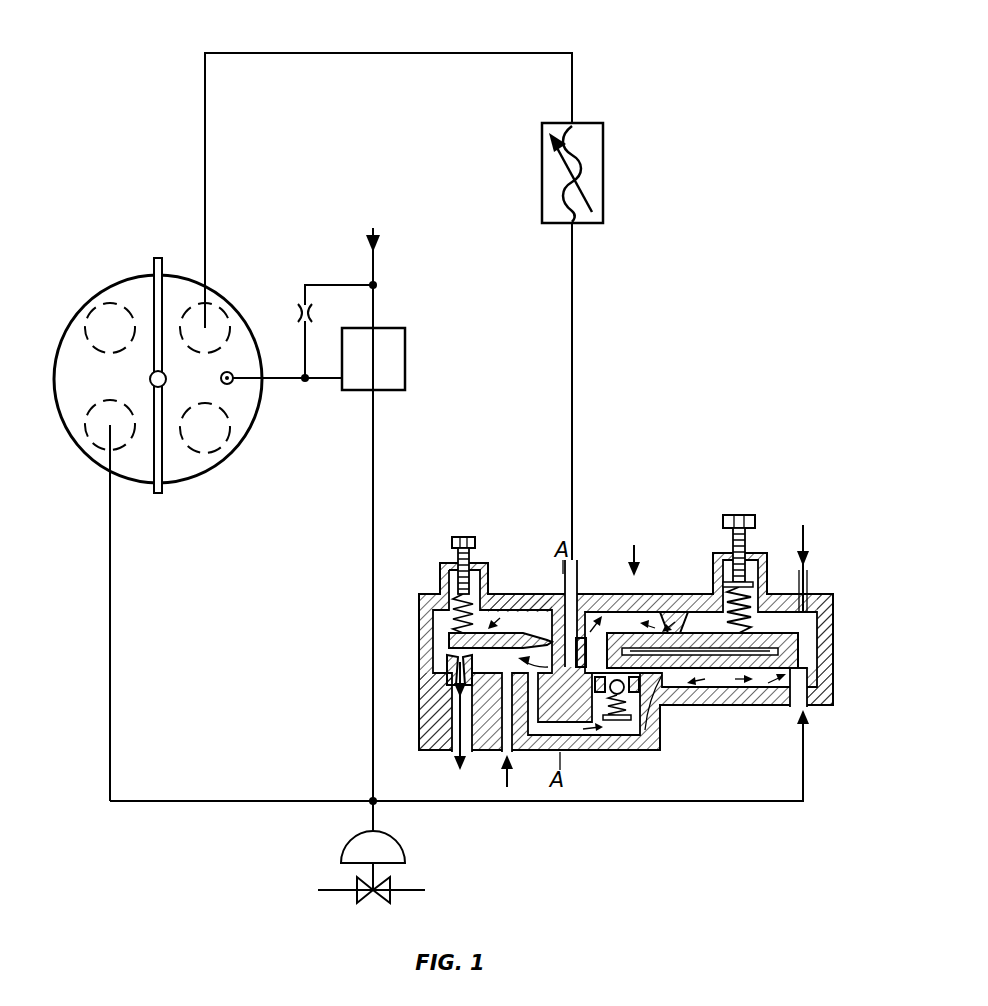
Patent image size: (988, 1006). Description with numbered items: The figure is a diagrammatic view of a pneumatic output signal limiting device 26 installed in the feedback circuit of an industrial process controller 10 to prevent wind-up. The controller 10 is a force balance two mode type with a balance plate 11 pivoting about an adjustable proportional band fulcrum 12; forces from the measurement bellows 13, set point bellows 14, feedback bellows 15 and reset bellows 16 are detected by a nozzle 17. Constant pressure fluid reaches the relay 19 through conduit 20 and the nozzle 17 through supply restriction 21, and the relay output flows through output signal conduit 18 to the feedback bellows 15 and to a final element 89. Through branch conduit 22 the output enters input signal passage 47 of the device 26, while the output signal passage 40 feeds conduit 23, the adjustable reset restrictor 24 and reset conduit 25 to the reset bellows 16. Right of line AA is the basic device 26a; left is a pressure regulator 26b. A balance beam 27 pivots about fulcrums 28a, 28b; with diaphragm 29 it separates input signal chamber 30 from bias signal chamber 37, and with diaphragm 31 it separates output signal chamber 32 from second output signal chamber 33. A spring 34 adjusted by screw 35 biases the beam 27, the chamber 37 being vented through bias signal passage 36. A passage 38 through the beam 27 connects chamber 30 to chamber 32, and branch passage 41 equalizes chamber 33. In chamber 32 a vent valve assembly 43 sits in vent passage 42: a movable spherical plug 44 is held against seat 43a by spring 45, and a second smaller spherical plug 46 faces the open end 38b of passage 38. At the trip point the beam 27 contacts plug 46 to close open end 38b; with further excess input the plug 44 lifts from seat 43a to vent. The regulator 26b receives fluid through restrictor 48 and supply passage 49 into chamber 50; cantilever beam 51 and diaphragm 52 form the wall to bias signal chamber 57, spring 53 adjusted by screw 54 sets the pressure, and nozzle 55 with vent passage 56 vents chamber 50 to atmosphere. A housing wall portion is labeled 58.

The industrial process controller 10 is at (94, 265).
The balance plate 11 is at (67, 426).
The adjustable proportional band fulcrum 12 is at (158, 258).
The measurement bellows 13 is at (100, 325).
The set point bellows 14 is at (213, 436).
The feedback bellows 15 is at (105, 434).
The reset bellows 16 is at (212, 322).
The nozzle 17 is at (232, 384).
The output signal conduit 18 is at (372, 551).
The relay 19 is at (406, 348).
The conduit 20 is at (376, 266).
The supply restriction 21 is at (314, 313).
The branch conduit 22 is at (440, 803).
The conduit 23 is at (573, 354).
The adjustable reset restrictor 24 is at (604, 160).
The reset conduit 25 is at (462, 53).
The pneumatic output signal limiting device 26 is at (637, 548).
The basic pneumatic output signal limiting device 26a is at (673, 596).
The pressure regulator 26b is at (495, 610).
The balance beam 27 is at (753, 707).
The fulcrum 28a is at (703, 708).
The fulcrum 28b is at (690, 615).
The diaphragm 29 is at (835, 637).
The input signal chamber 30 is at (775, 707).
The diaphragm 31 is at (598, 610).
The output signal chamber 32 is at (680, 706).
The second output signal chamber 33 is at (743, 672).
The spring 34 is at (762, 584).
The screw 35 is at (750, 533).
The bias signal passage 36 is at (808, 576).
The bias signal chamber 37 is at (796, 620).
The passage 38 is at (834, 673).
The open end 38b is at (614, 632).
The output signal passage 40 is at (571, 560).
The branch passage 41 is at (583, 636).
The vent passage 42 is at (620, 750).
The vent valve assembly 43 is at (645, 750).
The seat 43a is at (585, 750).
The movable spherical plug 44 is at (636, 750).
The spring 45 is at (580, 750).
The second smaller spherical plug 46 is at (643, 640).
The input signal passage 47 is at (806, 711).
The restrictor 48 is at (483, 742).
The supply passage 49 is at (419, 745).
The chamber 50 is at (534, 653).
The cantilever beam 51 is at (518, 633).
The diaphragm 52 is at (419, 599).
The spring 53 is at (456, 607).
The screw 54 is at (456, 546).
The nozzle 55 is at (452, 660).
The vent passage 56 is at (458, 703).
The bias signal chamber 57 is at (535, 625).
The housing wall 58 is at (527, 600).
The final element 89 is at (342, 855).